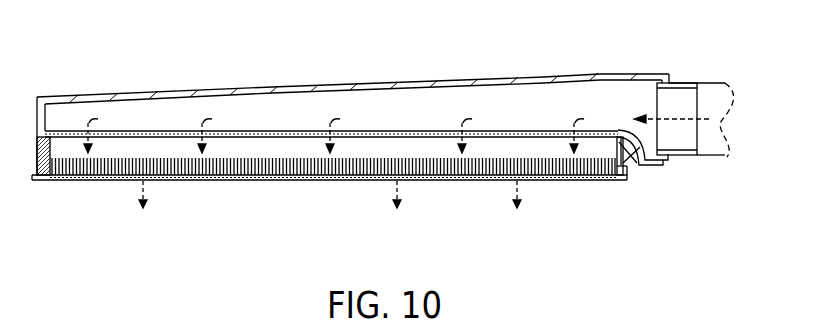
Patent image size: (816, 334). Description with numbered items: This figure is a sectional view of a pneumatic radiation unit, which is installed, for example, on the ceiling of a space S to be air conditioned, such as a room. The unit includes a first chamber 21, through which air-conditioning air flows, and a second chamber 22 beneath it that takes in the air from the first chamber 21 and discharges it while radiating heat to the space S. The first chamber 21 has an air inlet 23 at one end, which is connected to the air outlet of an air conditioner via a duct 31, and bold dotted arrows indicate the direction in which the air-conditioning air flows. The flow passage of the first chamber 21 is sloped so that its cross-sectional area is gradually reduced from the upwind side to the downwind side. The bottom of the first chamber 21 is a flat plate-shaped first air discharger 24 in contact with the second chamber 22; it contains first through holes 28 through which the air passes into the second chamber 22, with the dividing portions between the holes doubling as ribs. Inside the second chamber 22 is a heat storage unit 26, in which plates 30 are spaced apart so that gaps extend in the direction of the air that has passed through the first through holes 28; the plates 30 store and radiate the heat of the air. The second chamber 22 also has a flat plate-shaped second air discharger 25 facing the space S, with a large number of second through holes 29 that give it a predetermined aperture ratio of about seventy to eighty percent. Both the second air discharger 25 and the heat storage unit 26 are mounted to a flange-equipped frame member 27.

The first chamber 21 is at (492, 71).
The second chamber 22 is at (503, 184).
The air inlet 23 is at (684, 92).
The first air discharger 24 is at (594, 132).
The second air discharger 25 is at (472, 182).
The heat storage unit 26 is at (238, 151).
The flange-equipped frame member 27 is at (633, 165).
The first through holes 28 is at (168, 131).
The second through holes 29 is at (111, 181).
The plates 30 is at (178, 181).
The duct 31 is at (702, 158).
The space to be air conditioned S is at (347, 252).